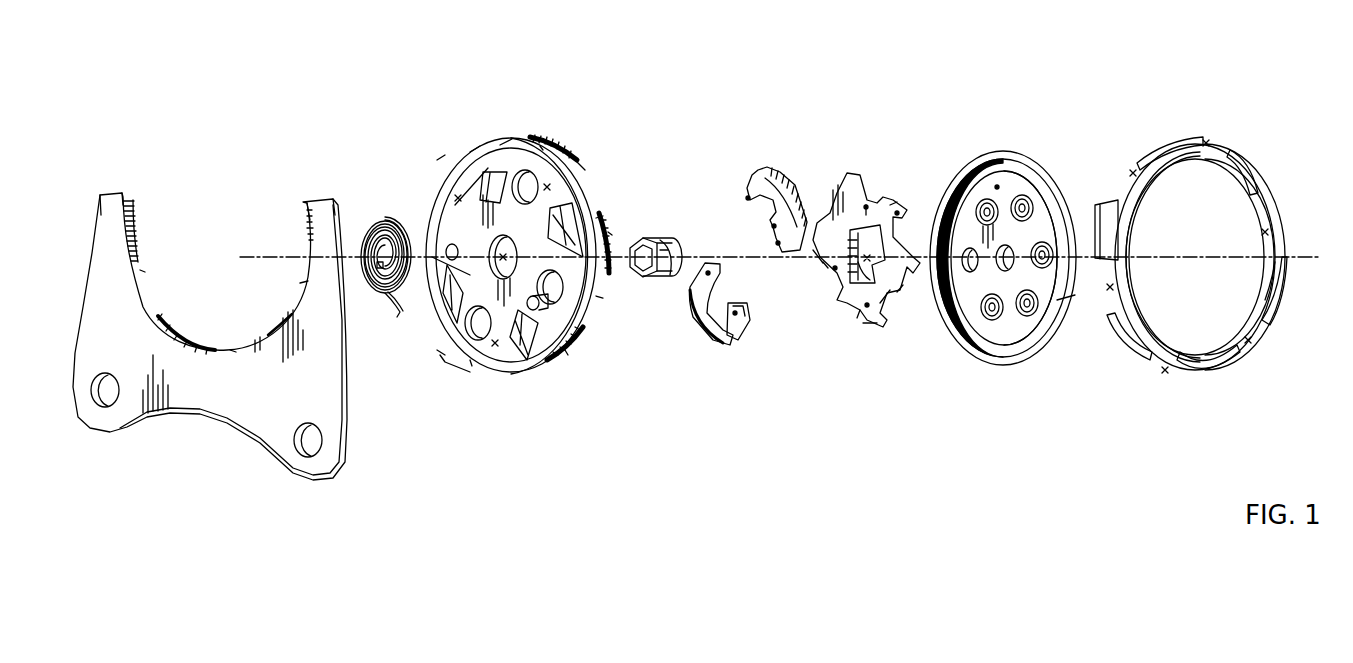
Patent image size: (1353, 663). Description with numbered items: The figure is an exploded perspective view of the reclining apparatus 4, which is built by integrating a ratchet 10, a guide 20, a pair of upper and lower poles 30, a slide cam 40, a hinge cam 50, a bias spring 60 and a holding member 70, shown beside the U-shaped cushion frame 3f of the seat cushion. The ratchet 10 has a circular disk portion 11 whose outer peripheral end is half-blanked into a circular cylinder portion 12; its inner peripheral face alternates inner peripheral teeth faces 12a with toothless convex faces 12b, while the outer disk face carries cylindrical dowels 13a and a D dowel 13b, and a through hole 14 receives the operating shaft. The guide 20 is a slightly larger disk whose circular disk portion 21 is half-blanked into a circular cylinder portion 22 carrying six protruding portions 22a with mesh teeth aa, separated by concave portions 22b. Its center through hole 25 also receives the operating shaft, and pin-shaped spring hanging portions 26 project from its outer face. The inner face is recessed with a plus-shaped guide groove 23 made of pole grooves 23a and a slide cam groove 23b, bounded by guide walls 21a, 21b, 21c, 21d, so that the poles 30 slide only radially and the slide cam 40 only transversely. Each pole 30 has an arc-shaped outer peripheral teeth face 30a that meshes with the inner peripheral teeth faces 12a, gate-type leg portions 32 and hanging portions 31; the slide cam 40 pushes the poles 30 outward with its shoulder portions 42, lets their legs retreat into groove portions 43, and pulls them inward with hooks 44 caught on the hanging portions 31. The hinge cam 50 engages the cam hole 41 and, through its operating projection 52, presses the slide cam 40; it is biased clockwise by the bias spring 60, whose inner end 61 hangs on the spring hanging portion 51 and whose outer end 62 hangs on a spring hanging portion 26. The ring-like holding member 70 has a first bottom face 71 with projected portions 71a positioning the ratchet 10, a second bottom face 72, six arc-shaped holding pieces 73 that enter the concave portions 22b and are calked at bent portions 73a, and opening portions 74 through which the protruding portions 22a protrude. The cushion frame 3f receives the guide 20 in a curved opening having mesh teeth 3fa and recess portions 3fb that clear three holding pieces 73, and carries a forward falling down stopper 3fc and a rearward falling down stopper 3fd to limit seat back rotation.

The cushion frame 3f is at (226, 404).
The mesh teeth 3fa is at (137, 222).
The recess portions 3fb is at (140, 273).
The forward falling down stopper 3fc is at (122, 194).
The rearward falling down stopper 3fd is at (312, 200).
The reclining apparatus 4 is at (986, 55).
The ratchet 10 is at (1057, 173).
The circular disk portion 11 is at (997, 187).
The circular cylinder portion 12 is at (963, 177).
The inner peripheral teeth faces 12a is at (945, 222).
The convex faces 12b is at (985, 205).
The dowels 13a is at (1043, 247).
The D dowel 13b is at (1003, 270).
The through hole 14 is at (1047, 342).
The guide 20 is at (597, 160).
The circular disk portion 21 is at (485, 187).
The guide wall 21a is at (565, 223).
The guide wall 21b is at (488, 167).
The guide wall 21c is at (523, 337).
The guide wall 21d is at (450, 290).
The circular cylinder portion 22 is at (587, 310).
The protruding portions 22a is at (532, 137).
The concave portions 22b is at (498, 142).
The guide groove 23 is at (497, 275).
The pole grooves 23a is at (492, 347).
The slide cam groove 23b is at (455, 197).
The through hole 25 is at (498, 257).
The spring hanging portions 26 is at (452, 258).
The poles 30 is at (752, 163).
The outer peripheral teeth faces 30a is at (790, 182).
The hanging portions 31 is at (785, 218).
The leg portions 32 is at (777, 243).
The slide cam 40 is at (853, 176).
The cam hole 41 is at (872, 260).
The shoulder portions 42 is at (874, 205).
The groove portions 43 is at (866, 205).
The hooks 44 is at (897, 213).
The hinge cam 50 is at (680, 234).
The spring hanging portion 51 is at (675, 277).
The operating projection 52 is at (653, 280).
The bias spring 60 is at (373, 204).
The inner end 61 is at (379, 272).
The outer end 62 is at (400, 314).
The holding member 70 is at (1228, 129).
The first bottom face 71 is at (1140, 217).
The projected portions 71a is at (1158, 186).
The second bottom face 72 is at (1135, 168).
The holding pieces 73 is at (1194, 270).
The bent portion 73a is at (1153, 160).
The opening portions 74 is at (1133, 173).
The mesh teeth aa is at (470, 362).